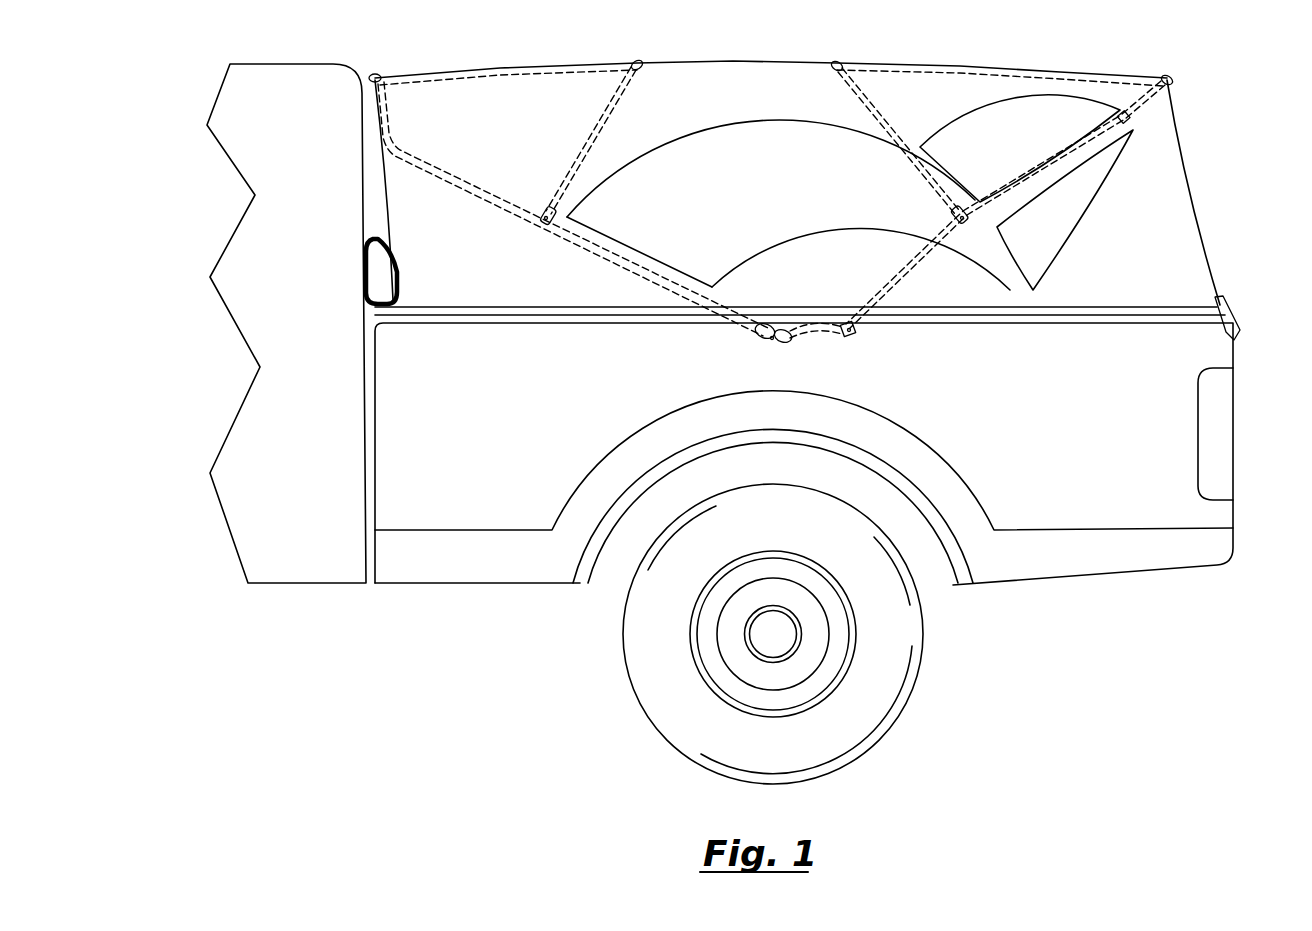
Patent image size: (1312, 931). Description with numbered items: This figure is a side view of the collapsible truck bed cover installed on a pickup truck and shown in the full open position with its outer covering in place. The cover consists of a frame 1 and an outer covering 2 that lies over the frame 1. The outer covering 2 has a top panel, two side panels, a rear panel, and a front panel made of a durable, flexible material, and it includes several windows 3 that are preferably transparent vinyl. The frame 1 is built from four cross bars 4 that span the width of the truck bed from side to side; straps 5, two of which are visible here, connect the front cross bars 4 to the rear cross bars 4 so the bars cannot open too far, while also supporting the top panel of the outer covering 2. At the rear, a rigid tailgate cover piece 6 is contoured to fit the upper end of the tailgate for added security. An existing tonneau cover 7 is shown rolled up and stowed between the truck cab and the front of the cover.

The frame 1 is at (612, 297).
The outer covering 2 is at (712, 98).
The windows 3 is at (765, 198).
The cross bars 4 is at (375, 76).
The straps 5 is at (498, 72).
The tailgate cover piece 6 is at (1236, 323).
The tonneau cover 7 is at (365, 247).